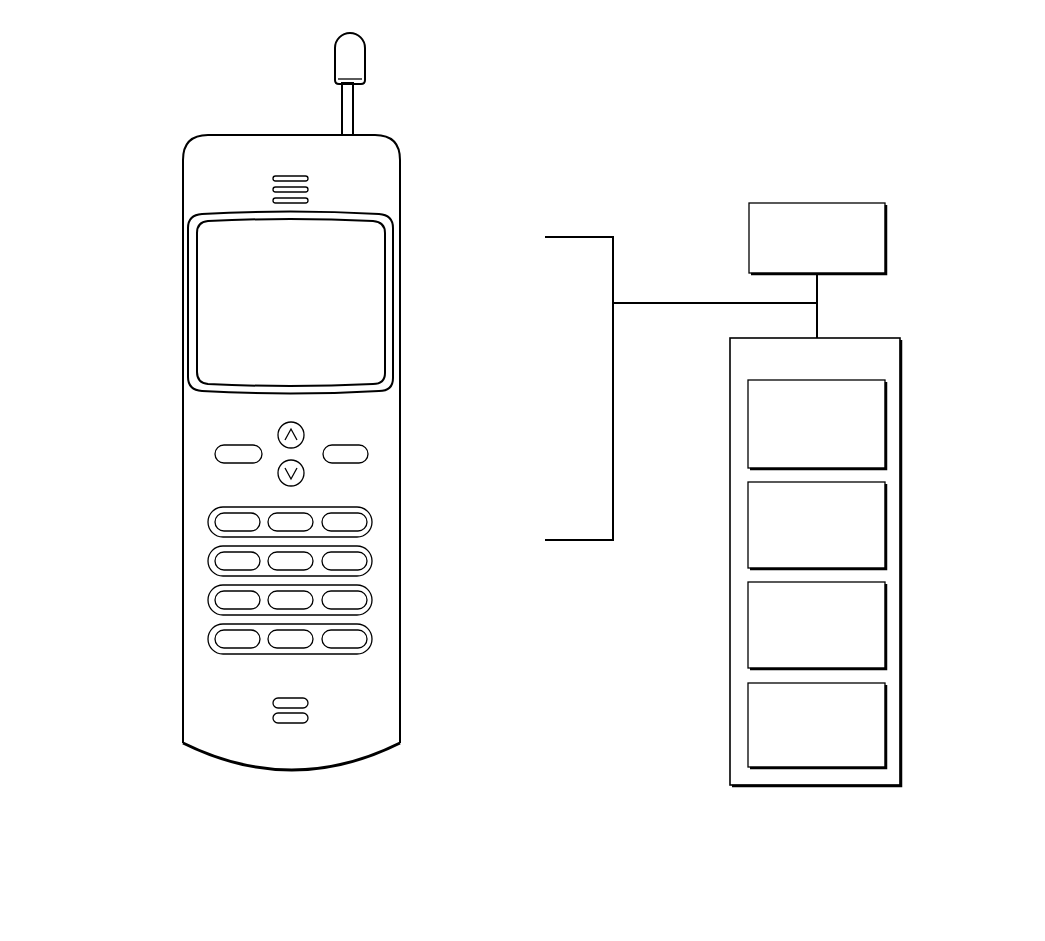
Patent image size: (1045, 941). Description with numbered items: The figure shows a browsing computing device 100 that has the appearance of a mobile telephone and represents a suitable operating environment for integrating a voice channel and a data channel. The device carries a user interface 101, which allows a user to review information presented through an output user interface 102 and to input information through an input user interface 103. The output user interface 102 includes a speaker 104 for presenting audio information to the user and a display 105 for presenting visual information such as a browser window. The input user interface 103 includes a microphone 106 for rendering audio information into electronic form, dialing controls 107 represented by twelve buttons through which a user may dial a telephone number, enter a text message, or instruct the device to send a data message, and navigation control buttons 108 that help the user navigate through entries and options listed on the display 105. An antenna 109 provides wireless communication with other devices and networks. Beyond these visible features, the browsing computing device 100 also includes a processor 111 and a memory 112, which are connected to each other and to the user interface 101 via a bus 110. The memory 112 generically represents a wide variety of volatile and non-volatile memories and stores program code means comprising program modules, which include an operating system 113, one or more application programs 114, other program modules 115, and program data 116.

The browsing computing device 100 is at (652, 114).
The user interface 101 is at (183, 773).
The output user interface 102 is at (413, 380).
The input user interface 103 is at (413, 673).
The speaker 104 is at (177, 202).
The display 105 is at (177, 328).
The microphone 106 is at (177, 708).
The dialing controls 107 is at (173, 655).
The navigation control buttons 108 is at (177, 445).
The antenna 109 is at (385, 97).
The bus 110 is at (647, 303).
The processor 111 is at (803, 264).
The memory 112 is at (863, 372).
The operating system 113 is at (803, 457).
The application programs 114 is at (803, 559).
The other program modules 115 is at (803, 659).
The program data 116 is at (803, 759).